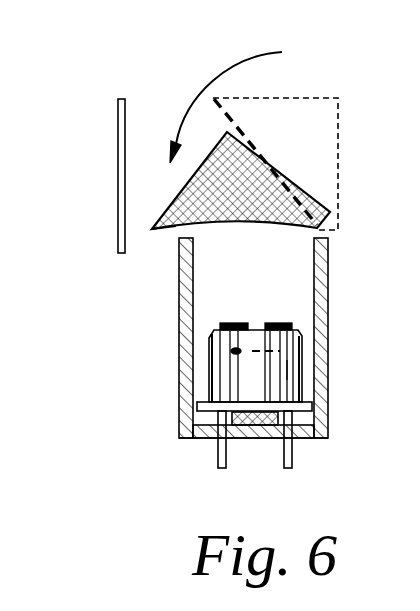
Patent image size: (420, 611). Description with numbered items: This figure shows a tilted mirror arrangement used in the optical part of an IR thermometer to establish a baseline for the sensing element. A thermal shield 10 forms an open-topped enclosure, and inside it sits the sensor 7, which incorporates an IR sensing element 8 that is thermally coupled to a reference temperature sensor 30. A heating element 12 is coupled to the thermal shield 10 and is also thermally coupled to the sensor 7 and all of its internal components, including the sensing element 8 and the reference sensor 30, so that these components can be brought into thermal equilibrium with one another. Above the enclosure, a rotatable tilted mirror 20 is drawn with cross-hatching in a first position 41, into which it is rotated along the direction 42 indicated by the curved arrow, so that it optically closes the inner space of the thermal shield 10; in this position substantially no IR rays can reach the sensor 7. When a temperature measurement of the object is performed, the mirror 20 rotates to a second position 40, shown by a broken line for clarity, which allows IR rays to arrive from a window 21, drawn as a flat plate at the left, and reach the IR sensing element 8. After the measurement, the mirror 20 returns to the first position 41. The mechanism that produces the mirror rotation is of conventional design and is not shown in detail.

The sensor 7 is at (287, 370).
The IR sensing element 8 is at (280, 351).
The thermal shield 10 is at (188, 420).
The heating element 12 is at (262, 425).
The tilted mirror 20 is at (322, 145).
The window 21 is at (117, 129).
The reference temperature sensor 30 is at (234, 352).
The second position 40 is at (292, 97).
The first position 41 is at (159, 234).
The direction 42 is at (218, 70).